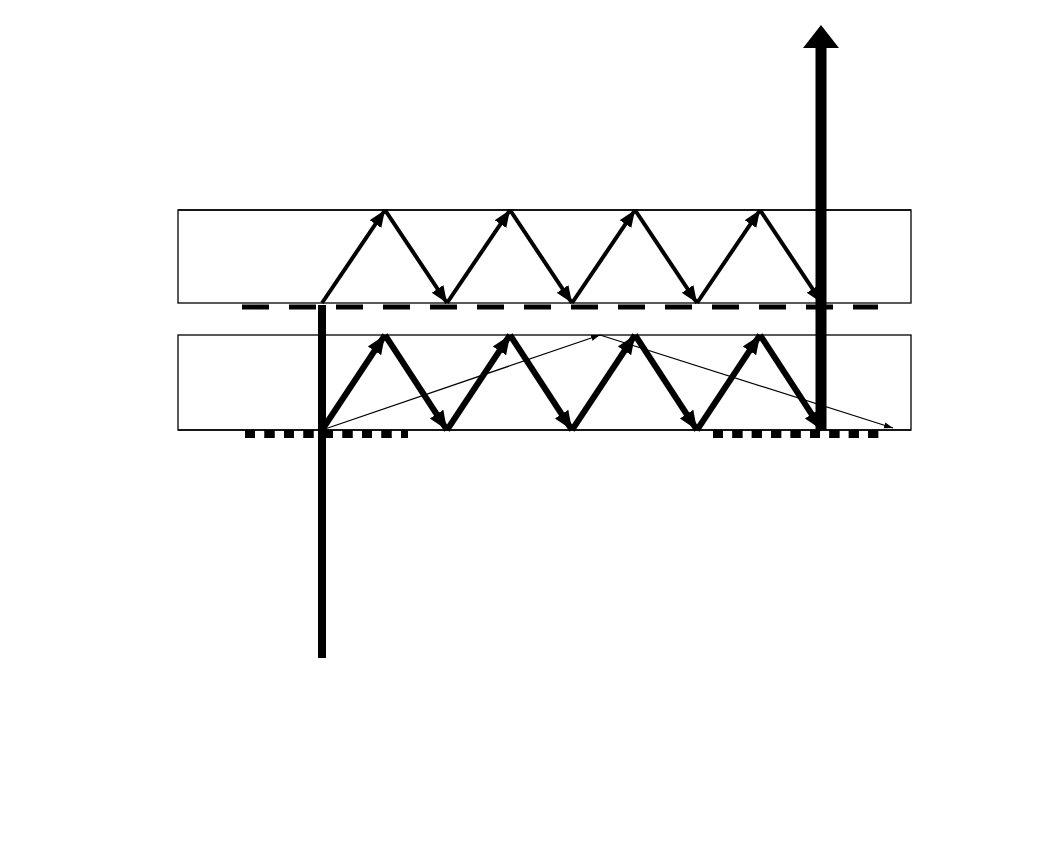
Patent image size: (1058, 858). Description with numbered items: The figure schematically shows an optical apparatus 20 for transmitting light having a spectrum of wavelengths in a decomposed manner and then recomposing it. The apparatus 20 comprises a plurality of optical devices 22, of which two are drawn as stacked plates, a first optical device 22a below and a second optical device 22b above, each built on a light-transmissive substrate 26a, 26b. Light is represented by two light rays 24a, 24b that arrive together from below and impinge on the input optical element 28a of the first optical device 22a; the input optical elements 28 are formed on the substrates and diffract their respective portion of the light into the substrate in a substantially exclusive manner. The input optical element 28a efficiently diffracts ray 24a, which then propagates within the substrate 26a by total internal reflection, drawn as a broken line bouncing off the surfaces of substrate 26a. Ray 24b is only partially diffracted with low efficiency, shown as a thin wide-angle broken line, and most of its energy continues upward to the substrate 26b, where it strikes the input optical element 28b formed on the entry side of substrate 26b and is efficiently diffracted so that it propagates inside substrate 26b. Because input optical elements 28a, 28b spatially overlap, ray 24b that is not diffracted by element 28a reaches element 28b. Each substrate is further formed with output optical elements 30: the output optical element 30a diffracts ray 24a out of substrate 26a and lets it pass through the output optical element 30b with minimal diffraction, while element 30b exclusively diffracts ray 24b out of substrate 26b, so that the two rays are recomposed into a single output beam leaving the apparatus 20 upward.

The optical apparatus 20 is at (512, 68).
The optical devices 22 is at (133, 296).
The first optical device 22a is at (510, 411).
The second optical device 22b is at (539, 250).
The first light ray 24a is at (330, 542).
The second light ray 24b is at (317, 566).
The light-transmissive substrate of first optical device 26a is at (197, 434).
The light-transmissive substrate of second optical device 26b is at (270, 209).
The input optical elements 28 is at (423, 447).
The input optical element of first optical device 28a is at (263, 440).
The input optical element of second optical device 28b is at (258, 308).
The output optical elements 30 is at (910, 447).
The output optical element of first substrate 30a is at (753, 438).
The output optical element of second substrate 30b is at (722, 306).